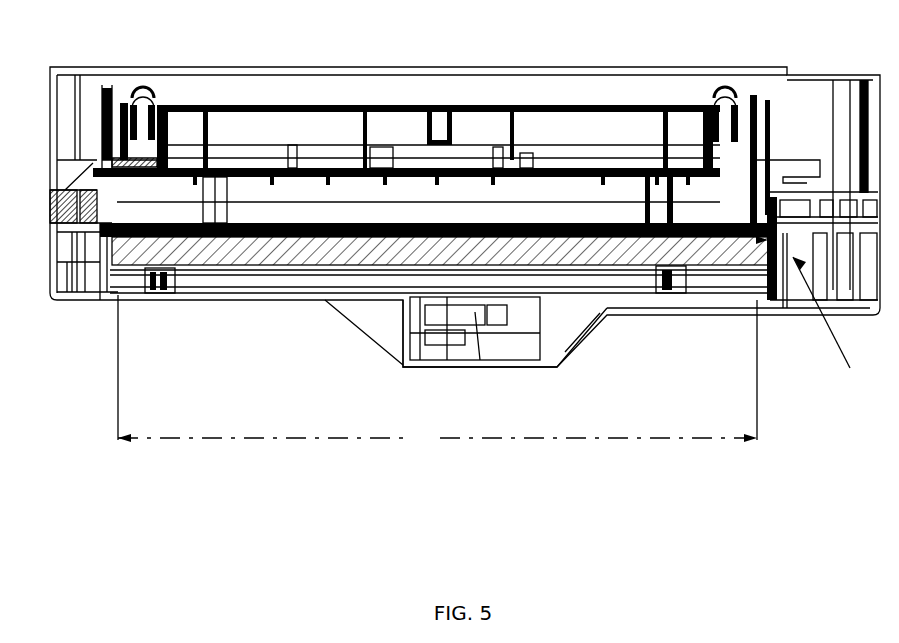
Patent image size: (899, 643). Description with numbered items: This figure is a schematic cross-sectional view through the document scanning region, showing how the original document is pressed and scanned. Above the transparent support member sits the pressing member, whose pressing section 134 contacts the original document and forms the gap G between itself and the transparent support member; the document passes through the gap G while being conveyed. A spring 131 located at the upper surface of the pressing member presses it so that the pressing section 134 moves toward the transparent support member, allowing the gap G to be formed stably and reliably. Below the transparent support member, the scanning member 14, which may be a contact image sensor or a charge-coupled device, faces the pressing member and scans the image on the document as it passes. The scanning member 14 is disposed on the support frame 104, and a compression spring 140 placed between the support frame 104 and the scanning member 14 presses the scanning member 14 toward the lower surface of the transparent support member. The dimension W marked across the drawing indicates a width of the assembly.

The spring 131 is at (218, 202).
The pressing section 134 is at (420, 225).
The scanning member 14 is at (325, 280).
The gap G is at (203, 272).
The support frame 104 is at (487, 368).
The compression spring 140 is at (668, 270).
The width W is at (437, 374).